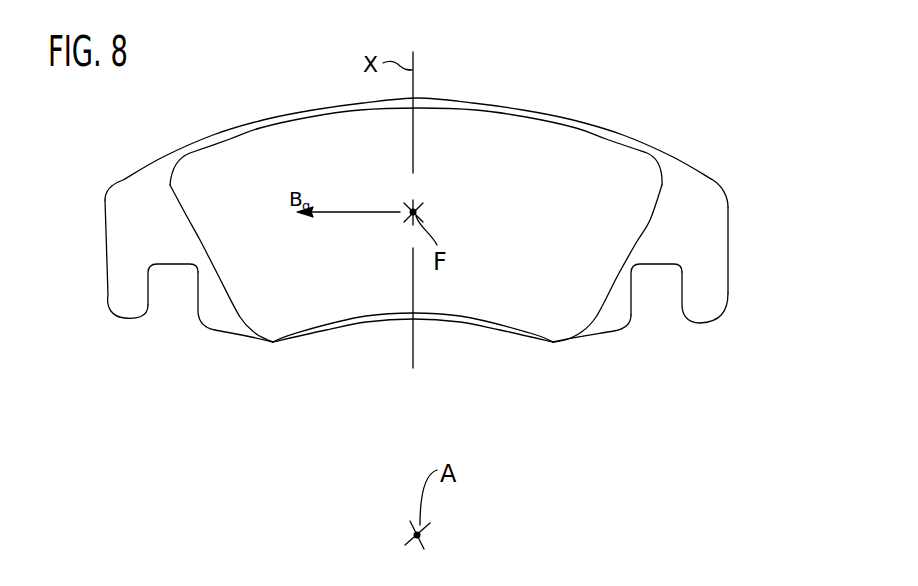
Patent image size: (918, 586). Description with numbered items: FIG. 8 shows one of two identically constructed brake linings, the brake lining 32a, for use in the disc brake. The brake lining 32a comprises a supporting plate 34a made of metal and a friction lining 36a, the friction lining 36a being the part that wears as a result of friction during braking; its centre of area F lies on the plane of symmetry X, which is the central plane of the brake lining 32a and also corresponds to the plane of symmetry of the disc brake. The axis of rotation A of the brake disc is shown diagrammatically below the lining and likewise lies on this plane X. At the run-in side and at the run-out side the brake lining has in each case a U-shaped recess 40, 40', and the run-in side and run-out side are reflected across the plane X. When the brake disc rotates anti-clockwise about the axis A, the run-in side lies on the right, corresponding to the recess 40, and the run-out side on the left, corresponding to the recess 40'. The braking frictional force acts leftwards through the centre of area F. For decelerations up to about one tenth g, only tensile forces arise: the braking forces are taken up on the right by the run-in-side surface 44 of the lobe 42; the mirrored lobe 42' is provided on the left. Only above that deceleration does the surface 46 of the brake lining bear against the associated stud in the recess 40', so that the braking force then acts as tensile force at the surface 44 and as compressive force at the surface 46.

The brake lining 32a is at (548, 110).
The supporting plate 34a is at (702, 200).
The friction lining 36a is at (541, 211).
The U-shaped recess 40 is at (610, 359).
The U-shaped recess 40' is at (172, 333).
The lobe 42 is at (733, 314).
The lobe 42' is at (102, 301).
The run-in-side surface 44 is at (678, 288).
The surface 46 is at (197, 308).